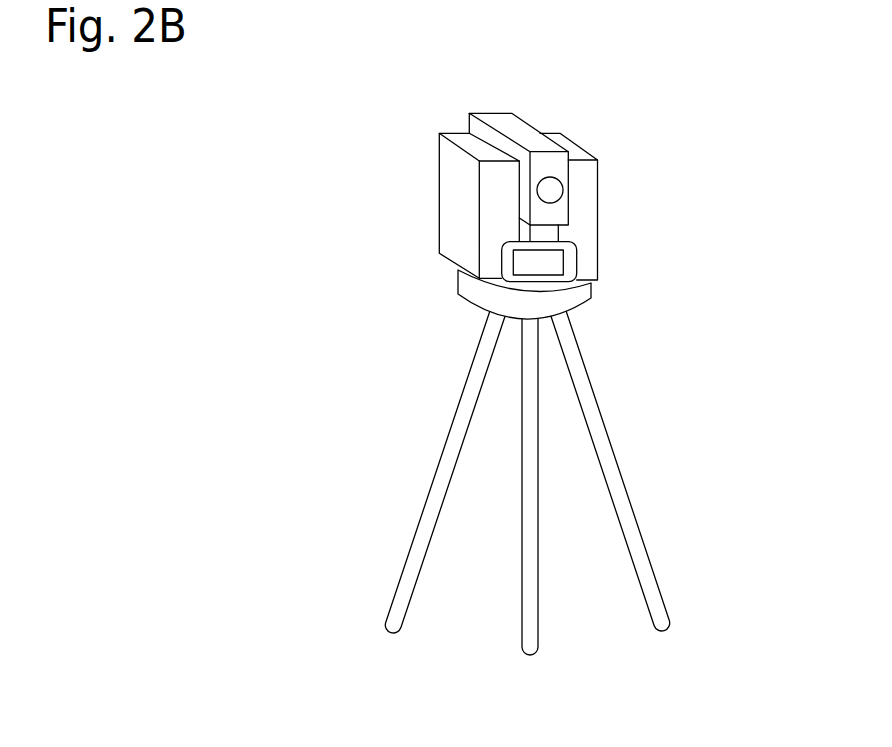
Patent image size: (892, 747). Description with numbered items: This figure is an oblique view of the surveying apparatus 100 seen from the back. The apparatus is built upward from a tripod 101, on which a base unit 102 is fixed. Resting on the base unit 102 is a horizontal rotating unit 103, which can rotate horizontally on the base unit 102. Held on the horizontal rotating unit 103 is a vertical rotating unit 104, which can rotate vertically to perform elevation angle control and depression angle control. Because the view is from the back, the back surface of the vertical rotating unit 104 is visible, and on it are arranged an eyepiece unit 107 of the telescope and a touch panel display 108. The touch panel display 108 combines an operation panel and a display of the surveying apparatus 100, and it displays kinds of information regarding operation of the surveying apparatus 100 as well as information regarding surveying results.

The surveying apparatus 100 is at (580, 124).
The tripod 101 is at (612, 474).
The base unit 102 is at (582, 297).
The horizontal rotating unit 103 is at (450, 222).
The vertical rotating unit 104 is at (468, 122).
The eyepiece unit 107 is at (552, 195).
The touch panel display 108 is at (554, 258).